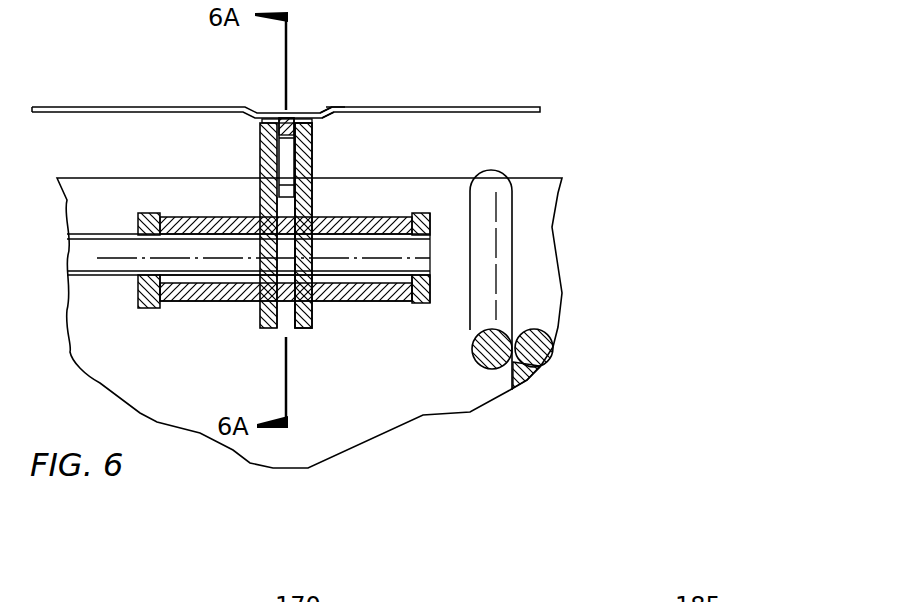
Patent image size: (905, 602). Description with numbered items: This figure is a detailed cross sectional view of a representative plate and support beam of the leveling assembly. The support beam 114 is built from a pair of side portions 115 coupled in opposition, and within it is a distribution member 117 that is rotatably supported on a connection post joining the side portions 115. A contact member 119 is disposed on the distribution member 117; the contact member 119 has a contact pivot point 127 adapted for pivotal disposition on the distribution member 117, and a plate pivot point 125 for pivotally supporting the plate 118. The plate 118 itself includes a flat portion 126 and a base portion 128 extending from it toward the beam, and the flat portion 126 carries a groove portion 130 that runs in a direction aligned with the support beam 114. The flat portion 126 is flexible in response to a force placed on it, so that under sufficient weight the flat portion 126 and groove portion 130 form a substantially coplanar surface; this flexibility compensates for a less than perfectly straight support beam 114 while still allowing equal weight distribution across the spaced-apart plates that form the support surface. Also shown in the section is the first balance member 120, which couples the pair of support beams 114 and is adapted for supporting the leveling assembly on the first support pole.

The support beam 114 is at (314, 200).
The side portion 115 is at (262, 134).
The distribution member 117 is at (287, 213).
The plate 118 is at (331, 98).
The contact member 119 is at (314, 146).
The first balance member 120 is at (97, 258).
The plate pivot point 125 is at (326, 121).
The flat portion 126 is at (497, 107).
The contact pivot point 127 is at (314, 186).
The base portion 128 is at (263, 124).
The groove portion 130 is at (268, 113).